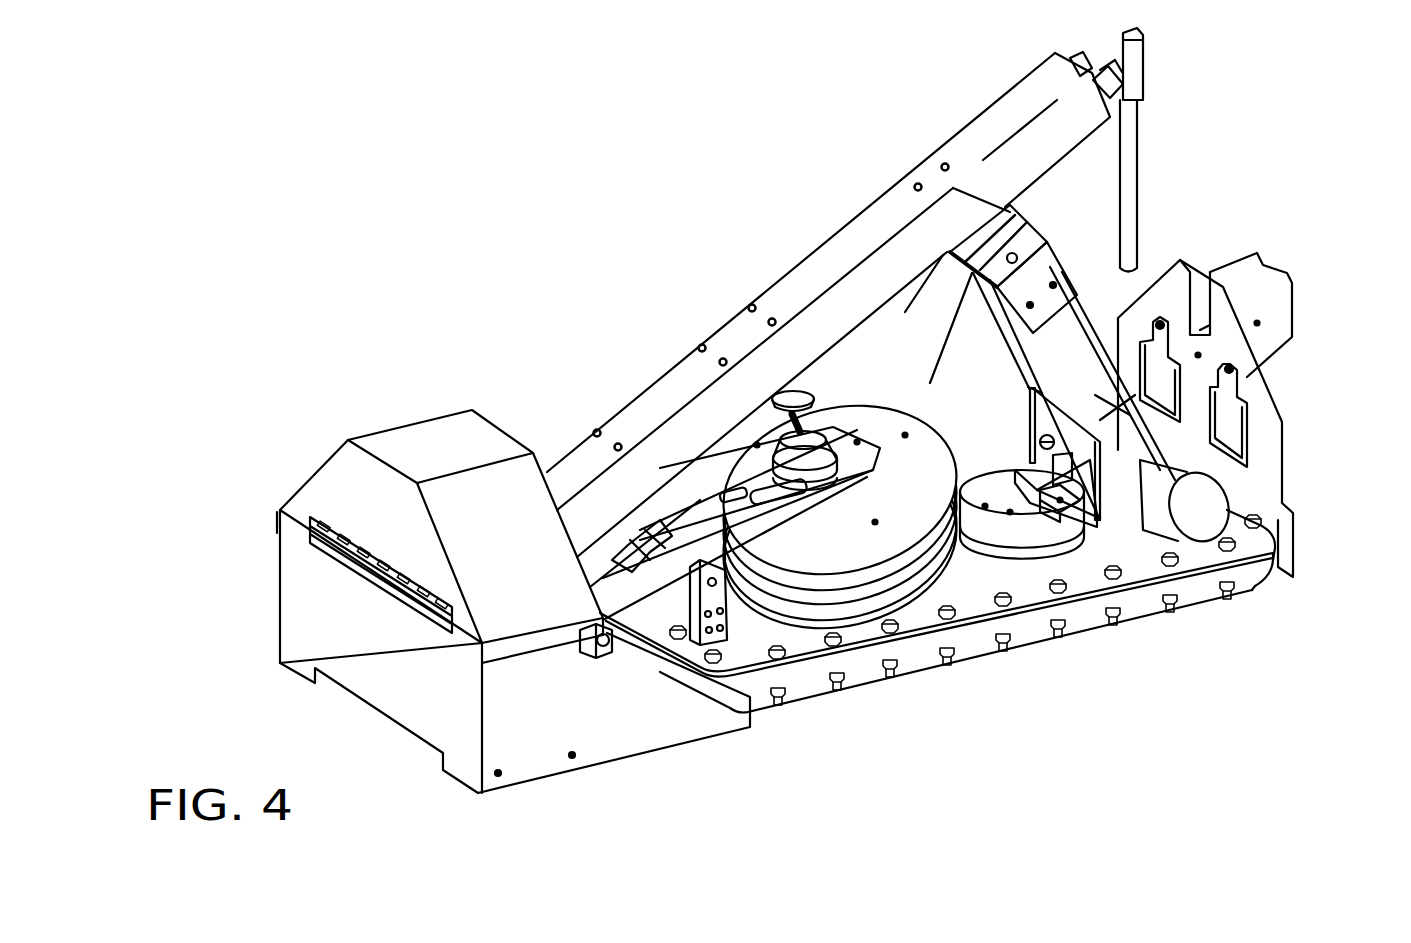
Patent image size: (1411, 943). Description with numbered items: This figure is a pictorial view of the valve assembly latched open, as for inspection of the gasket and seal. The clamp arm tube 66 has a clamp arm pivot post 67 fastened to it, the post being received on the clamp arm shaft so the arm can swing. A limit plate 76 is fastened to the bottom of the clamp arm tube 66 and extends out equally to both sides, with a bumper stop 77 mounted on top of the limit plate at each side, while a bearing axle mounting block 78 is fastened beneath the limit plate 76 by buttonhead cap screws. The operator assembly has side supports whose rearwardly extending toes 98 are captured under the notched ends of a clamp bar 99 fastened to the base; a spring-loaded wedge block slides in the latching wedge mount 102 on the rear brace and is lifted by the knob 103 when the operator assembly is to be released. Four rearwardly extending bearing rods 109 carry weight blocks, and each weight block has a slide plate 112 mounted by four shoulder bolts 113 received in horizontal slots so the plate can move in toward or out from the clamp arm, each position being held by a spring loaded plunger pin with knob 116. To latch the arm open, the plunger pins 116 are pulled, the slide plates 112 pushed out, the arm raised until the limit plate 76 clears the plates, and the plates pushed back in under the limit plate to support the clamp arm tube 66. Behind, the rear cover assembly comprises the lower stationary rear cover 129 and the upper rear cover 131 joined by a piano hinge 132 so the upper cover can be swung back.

The clamp arm tube 66 is at (852, 233).
The clamp arm pivot post 67 is at (650, 510).
The limit plate 76 is at (1025, 233).
The bumper stop 77 is at (987, 233).
The bearing axle mounting block 78 is at (942, 268).
The toe 98 is at (1097, 530).
The clamp bar 99 is at (1067, 513).
The latching wedge mount 102 is at (1085, 505).
The knob 103 is at (1075, 448).
The bearing rods 109 is at (985, 258).
The slide plate 112 is at (1035, 240).
The shoulder bolts 113 is at (1040, 228).
The spring loaded plunger pin with knob 116 is at (1045, 250).
The lower rear cover 129 is at (588, 732).
The upper rear cover 131 is at (424, 445).
The piano hinge 132 is at (358, 569).